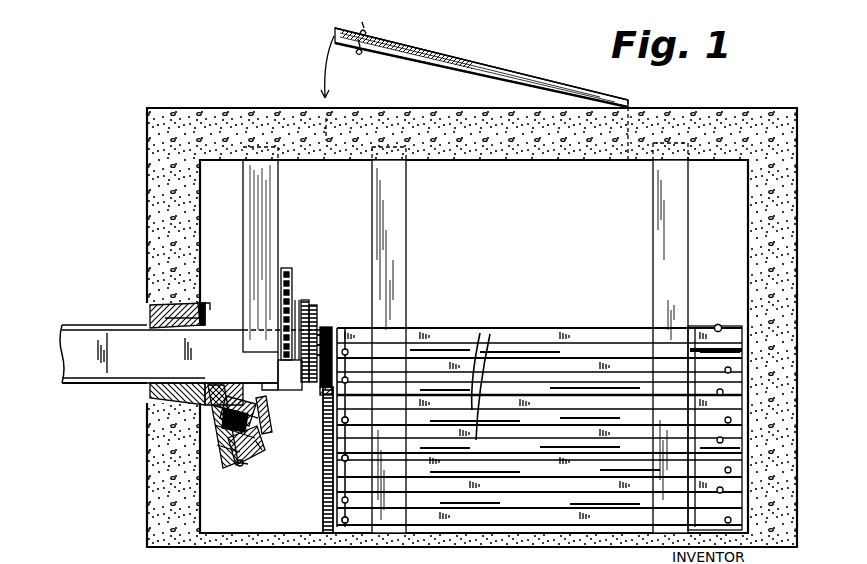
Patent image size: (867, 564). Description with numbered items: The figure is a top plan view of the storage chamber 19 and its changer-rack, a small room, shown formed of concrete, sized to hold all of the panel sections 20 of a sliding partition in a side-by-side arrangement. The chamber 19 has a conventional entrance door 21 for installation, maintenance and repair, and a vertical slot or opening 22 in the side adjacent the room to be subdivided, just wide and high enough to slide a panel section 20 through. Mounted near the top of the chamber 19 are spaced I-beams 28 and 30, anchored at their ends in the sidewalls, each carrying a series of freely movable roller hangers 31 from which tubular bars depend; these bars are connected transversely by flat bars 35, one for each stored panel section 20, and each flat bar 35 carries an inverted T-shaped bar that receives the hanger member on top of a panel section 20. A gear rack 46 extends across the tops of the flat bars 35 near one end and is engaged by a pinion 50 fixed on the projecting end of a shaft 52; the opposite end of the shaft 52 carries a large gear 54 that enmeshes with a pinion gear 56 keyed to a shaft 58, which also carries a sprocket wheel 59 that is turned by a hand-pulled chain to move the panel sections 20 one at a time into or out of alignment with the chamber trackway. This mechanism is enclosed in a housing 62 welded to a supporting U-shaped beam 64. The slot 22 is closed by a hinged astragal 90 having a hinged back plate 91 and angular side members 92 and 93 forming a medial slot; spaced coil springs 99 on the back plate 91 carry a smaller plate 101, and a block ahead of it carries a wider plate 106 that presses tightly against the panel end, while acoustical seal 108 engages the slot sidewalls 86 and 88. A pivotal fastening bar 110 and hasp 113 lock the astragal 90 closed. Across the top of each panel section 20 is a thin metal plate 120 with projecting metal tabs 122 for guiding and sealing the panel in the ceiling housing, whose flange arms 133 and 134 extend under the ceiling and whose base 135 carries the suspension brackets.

The storage chamber 19 is at (144, 514).
The panel section 20 is at (550, 320).
The entrance door 21 is at (430, 56).
The slot or opening 22 is at (192, 321).
The I-beam 28 is at (406, 183).
The I-beam 30 is at (653, 198).
The roller hanger 31 is at (418, 345).
The flat bar 35 is at (592, 398).
The gear rack 46 is at (323, 441).
The pinion 50 is at (335, 328).
The shaft 52 is at (320, 393).
The large gear 54 is at (290, 371).
The pinion gear 56 is at (315, 318).
The shaft 58 is at (300, 310).
The sprocket wheel 59 is at (289, 304).
The housing 62 is at (309, 308).
The U-shaped beam 64 is at (278, 188).
The sidewall of slot 86 is at (168, 393).
The sidewall of slot 88 is at (158, 312).
The astragal 90 is at (225, 476).
The hinged back plate 91 is at (220, 452).
The side member 92 is at (222, 384).
The side member 93 is at (243, 463).
The coil spring 99 is at (215, 418).
The plate 101 is at (260, 390).
The wider plate 106 is at (268, 412).
The acoustical seal 108 is at (256, 446).
The pivotal fastening bar 110 is at (218, 436).
The hasp 113 is at (209, 303).
The metal plate 120 is at (480, 333).
The metal tab 122 is at (718, 326).
The flange arm 133 is at (70, 324).
The flange arm 134 is at (75, 386).
The base of U-shaped housing 135 is at (108, 338).